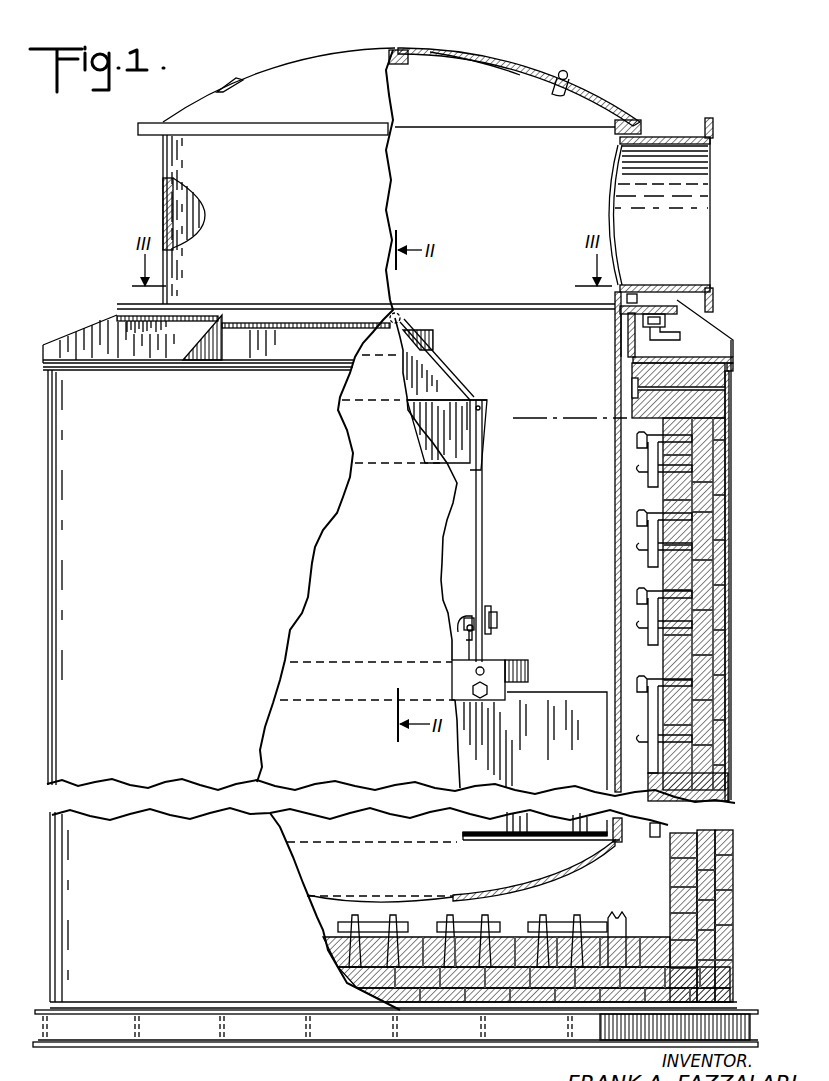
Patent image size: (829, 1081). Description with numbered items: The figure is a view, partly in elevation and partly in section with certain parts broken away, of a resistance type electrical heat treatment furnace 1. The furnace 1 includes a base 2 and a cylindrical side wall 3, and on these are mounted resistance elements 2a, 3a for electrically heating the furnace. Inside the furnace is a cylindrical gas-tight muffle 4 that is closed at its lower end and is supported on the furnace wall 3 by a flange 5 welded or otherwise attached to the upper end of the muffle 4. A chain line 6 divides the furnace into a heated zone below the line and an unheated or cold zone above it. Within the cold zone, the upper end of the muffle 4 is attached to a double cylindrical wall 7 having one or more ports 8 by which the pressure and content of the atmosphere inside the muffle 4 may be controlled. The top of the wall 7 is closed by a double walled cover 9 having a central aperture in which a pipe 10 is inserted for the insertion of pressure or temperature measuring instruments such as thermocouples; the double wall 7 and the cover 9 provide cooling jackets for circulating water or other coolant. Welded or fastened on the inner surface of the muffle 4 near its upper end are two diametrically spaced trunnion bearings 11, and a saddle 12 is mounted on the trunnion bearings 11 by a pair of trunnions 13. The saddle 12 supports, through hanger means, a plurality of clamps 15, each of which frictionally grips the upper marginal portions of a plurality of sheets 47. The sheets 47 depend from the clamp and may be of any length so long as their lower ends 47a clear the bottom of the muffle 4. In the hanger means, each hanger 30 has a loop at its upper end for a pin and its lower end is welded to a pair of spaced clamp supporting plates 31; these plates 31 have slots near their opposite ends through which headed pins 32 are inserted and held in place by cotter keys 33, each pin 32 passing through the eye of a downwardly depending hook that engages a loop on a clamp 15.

The furnace 1 is at (86, 276).
The base 2 is at (450, 982).
The resistance elements 2a is at (562, 921).
The cylindrical side wall 3 is at (717, 878).
The resistance elements 3a is at (655, 722).
The muffle 4 is at (612, 531).
The flange 5 is at (690, 302).
The chain line 6 is at (536, 420).
The double cylindrical wall 7 is at (163, 181).
The port 8 is at (682, 162).
The double walled cover 9 is at (521, 72).
The pipe 10 is at (398, 70).
The trunnion bearings 11 is at (433, 337).
The saddle 12 is at (467, 381).
The trunnions 13 is at (402, 313).
The clamp 15 is at (524, 648).
The hanger 30 is at (484, 529).
The clamp supporting plates 31 is at (478, 618).
The headed pins 32 is at (497, 620).
The cotter keys 33 is at (469, 636).
The sheets 47 is at (560, 708).
The lower ends of sheets 47a is at (513, 836).